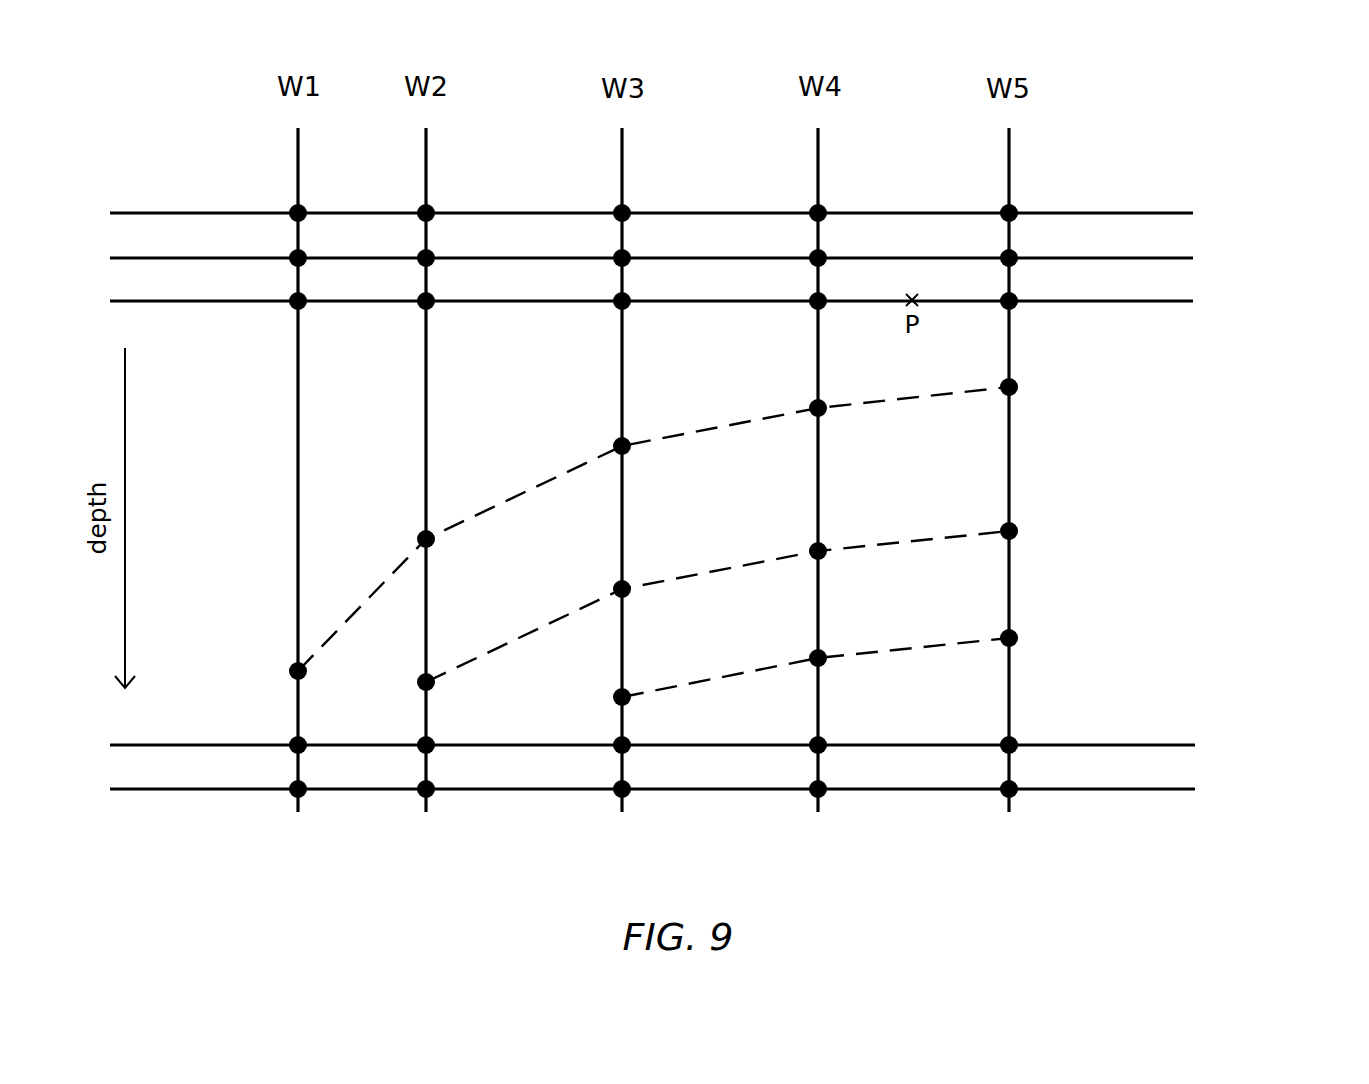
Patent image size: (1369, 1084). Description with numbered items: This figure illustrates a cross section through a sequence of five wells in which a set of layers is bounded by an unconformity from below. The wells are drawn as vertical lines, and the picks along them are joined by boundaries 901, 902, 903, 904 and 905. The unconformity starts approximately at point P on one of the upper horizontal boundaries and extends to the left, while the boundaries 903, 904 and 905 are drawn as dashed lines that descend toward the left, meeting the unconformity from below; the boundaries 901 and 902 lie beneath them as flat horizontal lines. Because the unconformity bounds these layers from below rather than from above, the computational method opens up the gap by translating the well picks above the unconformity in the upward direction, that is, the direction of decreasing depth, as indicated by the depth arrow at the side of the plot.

The boundary 901 is at (1230, 789).
The boundary 902 is at (1230, 745).
The boundary 903 is at (1060, 638).
The boundary 904 is at (1060, 531).
The boundary 905 is at (1060, 387).